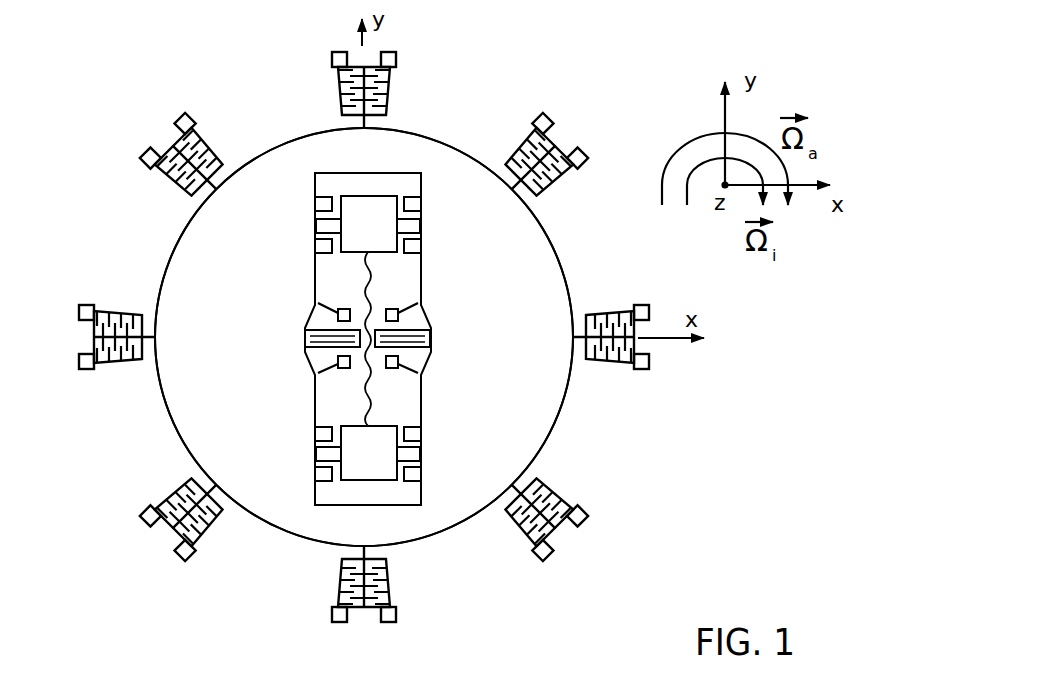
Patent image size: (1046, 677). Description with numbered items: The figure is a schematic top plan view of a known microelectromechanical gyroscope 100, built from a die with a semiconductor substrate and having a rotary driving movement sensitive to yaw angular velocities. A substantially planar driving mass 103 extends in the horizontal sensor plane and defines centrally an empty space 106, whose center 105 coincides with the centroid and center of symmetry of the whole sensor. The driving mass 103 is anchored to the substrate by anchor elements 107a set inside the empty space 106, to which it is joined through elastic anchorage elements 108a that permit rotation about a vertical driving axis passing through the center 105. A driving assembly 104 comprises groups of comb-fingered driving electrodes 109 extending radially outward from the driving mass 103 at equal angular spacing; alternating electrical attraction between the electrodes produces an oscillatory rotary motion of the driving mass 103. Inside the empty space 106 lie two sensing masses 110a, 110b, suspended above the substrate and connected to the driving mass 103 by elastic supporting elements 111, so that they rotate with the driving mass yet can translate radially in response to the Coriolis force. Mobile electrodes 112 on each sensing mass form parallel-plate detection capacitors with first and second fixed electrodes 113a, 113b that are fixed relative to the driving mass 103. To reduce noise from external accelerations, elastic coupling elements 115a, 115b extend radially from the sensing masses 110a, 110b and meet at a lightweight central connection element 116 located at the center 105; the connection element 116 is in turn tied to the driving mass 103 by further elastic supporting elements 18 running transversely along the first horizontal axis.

The microelectromechanical gyroscope 100 is at (117, 122).
The driving mass 103 is at (556, 376).
The driving assembly 104 is at (588, 538).
The center 105 is at (368, 333).
The empty space 106 is at (331, 178).
The anchor elements 107a is at (344, 306).
The elastic anchorage elements 108a is at (326, 302).
The driving electrodes 109 is at (514, 538).
The first sensing mass 110a is at (354, 214).
The second sensing mass 110b is at (377, 443).
The elastic supporting elements 111 is at (374, 184).
The mobile electrodes 112 is at (421, 224).
The first fixed electrodes 113a is at (426, 198).
The second fixed electrodes 113b is at (421, 246).
The first elastic coupling element 115a is at (423, 271).
The second elastic coupling element 115b is at (342, 408).
The connection element 116 is at (379, 326).
The comb electrode 18 is at (308, 331).